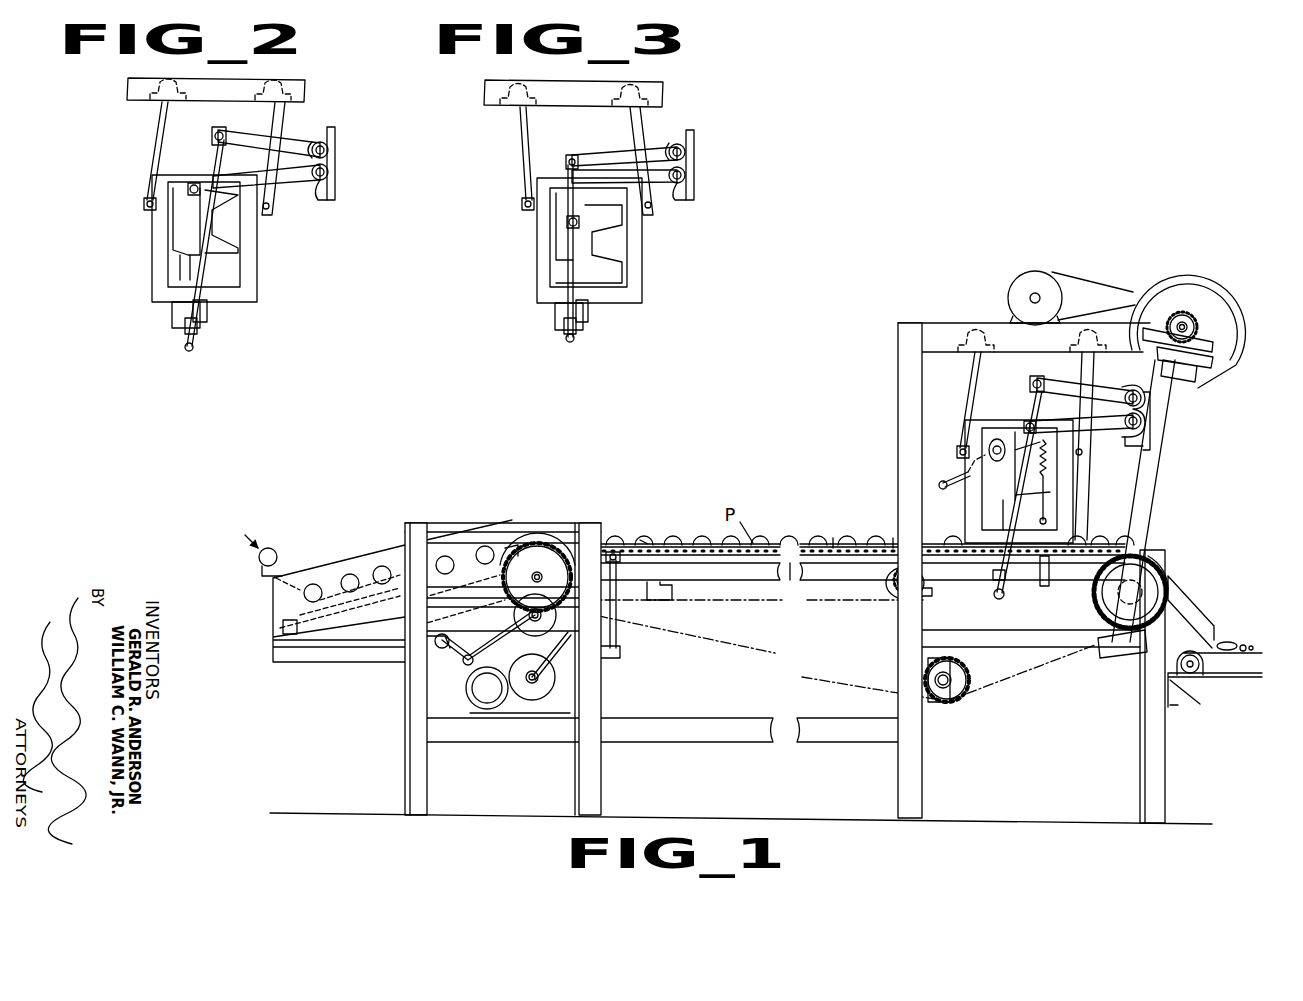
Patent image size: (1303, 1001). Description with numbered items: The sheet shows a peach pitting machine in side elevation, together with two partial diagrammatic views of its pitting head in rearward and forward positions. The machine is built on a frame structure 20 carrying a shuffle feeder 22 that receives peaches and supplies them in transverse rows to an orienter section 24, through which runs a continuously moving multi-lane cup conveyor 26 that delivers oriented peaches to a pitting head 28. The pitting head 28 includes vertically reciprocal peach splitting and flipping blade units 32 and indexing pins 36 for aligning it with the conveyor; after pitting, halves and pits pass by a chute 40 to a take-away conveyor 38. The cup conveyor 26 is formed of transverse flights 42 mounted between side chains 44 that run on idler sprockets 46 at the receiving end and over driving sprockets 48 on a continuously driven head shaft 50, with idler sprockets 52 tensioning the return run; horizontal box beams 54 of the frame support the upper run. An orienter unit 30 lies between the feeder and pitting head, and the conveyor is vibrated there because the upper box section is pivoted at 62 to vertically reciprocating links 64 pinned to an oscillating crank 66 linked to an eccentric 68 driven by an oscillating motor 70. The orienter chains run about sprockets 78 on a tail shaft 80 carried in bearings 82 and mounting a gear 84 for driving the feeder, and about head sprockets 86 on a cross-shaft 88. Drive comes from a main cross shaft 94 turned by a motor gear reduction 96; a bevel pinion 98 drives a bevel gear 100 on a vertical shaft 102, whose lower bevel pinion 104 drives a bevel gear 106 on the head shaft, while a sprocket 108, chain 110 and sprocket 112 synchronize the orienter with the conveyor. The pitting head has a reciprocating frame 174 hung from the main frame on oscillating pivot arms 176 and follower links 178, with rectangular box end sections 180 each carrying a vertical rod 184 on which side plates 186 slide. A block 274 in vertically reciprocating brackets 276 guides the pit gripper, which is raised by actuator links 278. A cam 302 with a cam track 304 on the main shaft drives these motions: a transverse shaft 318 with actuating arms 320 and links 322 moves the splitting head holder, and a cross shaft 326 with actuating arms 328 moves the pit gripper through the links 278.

In FIG. 1, the frame structure 20 is at (896, 340).
In FIG. 1, the shuffle feeder 22 is at (337, 556).
In FIG. 1, the orienter section 24 is at (694, 536).
In FIG. 1, the cup conveyor 26 is at (648, 540).
In FIG. 1, the pitting head 28 is at (938, 474).
In FIG. 1, the orienter unit 30 is at (740, 590).
In FIG. 1, the peach splitting and flipping blade units 32 is at (1000, 522).
In FIG. 1, the indexing pins 36 is at (1045, 506).
In FIG. 1, the take-away conveyor 38 is at (1255, 680).
In FIG. 1, the chute 40 is at (1192, 612).
In FIG. 1, the transverse flights 42 is at (833, 545).
In FIG. 1, the conveyor side chains 44 is at (793, 545).
In FIG. 1, the idler sprockets 46 is at (548, 560).
In FIG. 1, the driving sprockets 48 is at (1095, 617).
In FIG. 1, the head shaft 50 is at (1158, 566).
In FIG. 1, the idler sprockets 52 is at (948, 702).
In FIG. 1, the horizontal box beams 54 is at (815, 588).
In FIG. 1, the pivot 62 is at (616, 552).
In FIG. 1, the vertically reciprocating links 64 is at (618, 612).
In FIG. 1, the oscillating crank 66 is at (620, 656).
In FIG. 1, the eccentric 68 is at (540, 677).
In FIG. 1, the oscillating motor 70 is at (487, 695).
In FIG. 1, the sprockets 78 is at (535, 545).
In FIG. 1, the tail shaft 80 is at (542, 575).
In FIG. 1, the bearings 82 is at (525, 580).
In FIG. 1, the gear 84 is at (515, 552).
In FIG. 1, the head sprockets 86 is at (895, 588).
In FIG. 1, the cross-shaft 88 is at (898, 562).
In FIG. 1, the main cross shaft 94 is at (1198, 327).
In FIG. 1, the motor gear reduction 96 is at (1030, 272).
In FIG. 1, the bevel pinion 98 is at (1196, 312).
In FIG. 1, the bevel gear 100 is at (1213, 346).
In FIG. 1, the vertical shaft 102 is at (1150, 497).
In FIG. 1, the bevel pinion 104 is at (1120, 652).
In FIG. 1, the bevel gear 106 is at (1168, 580).
In FIG. 1, the sprocket 108 is at (922, 583).
In FIG. 1, the chain 110 is at (932, 598).
In FIG. 1, the sprocket 112 is at (1096, 588).
In FIG. 2, the reciprocating frame 174 is at (150, 273).
In FIG. 3, the reciprocating frame 174 is at (535, 287).
In FIG. 1, the reciprocating frame 174 is at (1077, 480).
In FIG. 2, the oscillating pivot arms 176 is at (157, 115).
In FIG. 3, the oscillating pivot arms 176 is at (524, 157).
In FIG. 1, the oscillating pivot arms 176 is at (972, 373).
In FIG. 2, the follower links 178 is at (283, 115).
In FIG. 3, the follower links 178 is at (640, 118).
In FIG. 1, the follower links 178 is at (1080, 366).
In FIG. 2, the rectangular box end sections 180 is at (157, 240).
In FIG. 3, the rectangular box end sections 180 is at (635, 253).
In FIG. 1, the vertical rod 184 is at (1050, 522).
In FIG. 2, the side plates 186 is at (173, 219).
In FIG. 3, the side plates 186 is at (557, 240).
In FIG. 1, the side plates 186 is at (990, 490).
In FIG. 2, the block 274 is at (200, 315).
In FIG. 3, the block 274 is at (588, 315).
In FIG. 2, the vertically reciprocating brackets 276 is at (175, 312).
In FIG. 3, the vertically reciprocating brackets 276 is at (557, 312).
In FIG. 2, the actuator links 278 is at (200, 282).
In FIG. 3, the actuator links 278 is at (570, 262).
In FIG. 1, the actuator links 278 is at (1003, 598).
In FIG. 1, the cam 302 is at (1175, 272).
In FIG. 1, the cam track 304 is at (1145, 293).
In FIG. 2, the transverse shaft 318 is at (328, 146).
In FIG. 3, the transverse shaft 318 is at (690, 152).
In FIG. 1, the transverse shaft 318 is at (1148, 398).
In FIG. 2, the actuating arms 320 is at (245, 127).
In FIG. 3, the actuating arms 320 is at (617, 152).
In FIG. 1, the actuating arms 320 is at (1033, 386).
In FIG. 2, the links 322 is at (197, 158).
In FIG. 3, the links 322 is at (557, 185).
In FIG. 1, the links 322 is at (1030, 395).
In FIG. 2, the cross shaft 326 is at (328, 172).
In FIG. 3, the cross shaft 326 is at (690, 176).
In FIG. 1, the cross shaft 326 is at (1150, 420).
In FIG. 2, the actuating arms 328 is at (296, 183).
In FIG. 3, the actuating arms 328 is at (663, 190).
In FIG. 1, the actuating arms 328 is at (1106, 422).